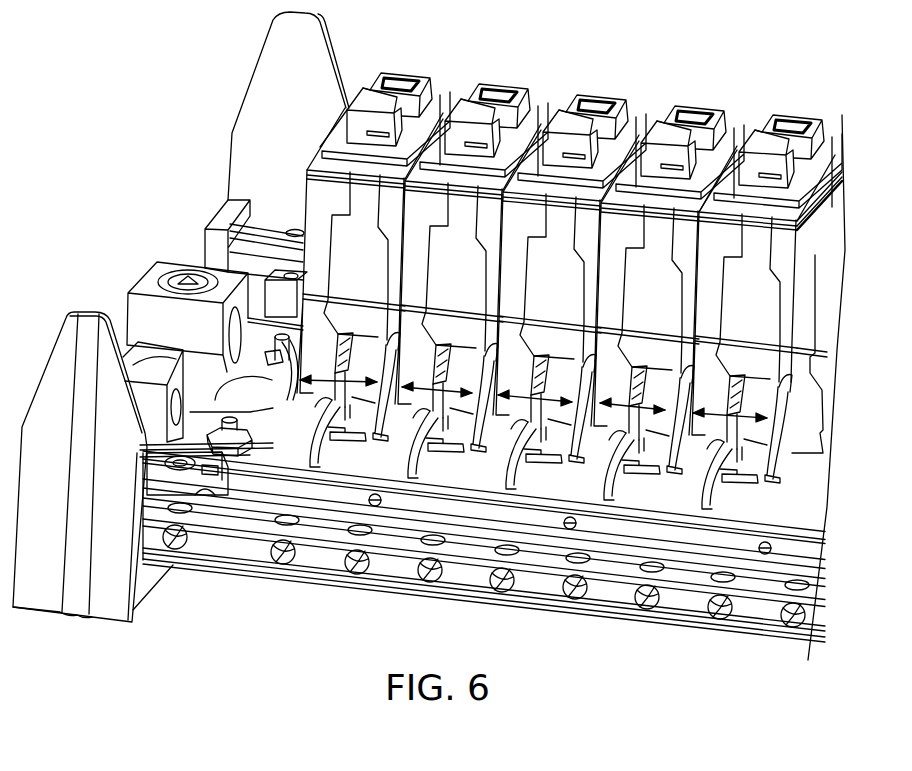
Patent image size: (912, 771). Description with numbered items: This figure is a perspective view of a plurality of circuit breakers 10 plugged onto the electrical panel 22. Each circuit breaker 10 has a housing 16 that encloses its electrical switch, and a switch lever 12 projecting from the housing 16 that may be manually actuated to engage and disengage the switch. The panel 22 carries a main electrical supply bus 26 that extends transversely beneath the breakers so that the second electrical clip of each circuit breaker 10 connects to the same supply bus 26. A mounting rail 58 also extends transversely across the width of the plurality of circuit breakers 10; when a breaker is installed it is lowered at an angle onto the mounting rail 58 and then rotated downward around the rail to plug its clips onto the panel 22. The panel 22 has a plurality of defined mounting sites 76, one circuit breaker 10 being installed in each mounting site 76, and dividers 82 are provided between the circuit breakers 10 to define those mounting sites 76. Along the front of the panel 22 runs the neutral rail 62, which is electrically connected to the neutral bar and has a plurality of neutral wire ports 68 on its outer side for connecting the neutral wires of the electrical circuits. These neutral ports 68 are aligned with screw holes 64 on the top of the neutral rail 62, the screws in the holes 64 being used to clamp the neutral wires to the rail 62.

The circuit breaker 10 is at (401, 80).
The switch lever 12 is at (349, 106).
The housing 16 is at (342, 233).
The electrical panel 22 is at (218, 384).
The main electrical supply bus 26 is at (316, 442).
The mounting rail 58 is at (711, 539).
The neutral rail 62 is at (759, 613).
The screw holes 64 is at (363, 535).
The neutral wire ports 68 is at (353, 570).
The mounting sites 76 is at (350, 373).
The dividers 82 is at (280, 382).